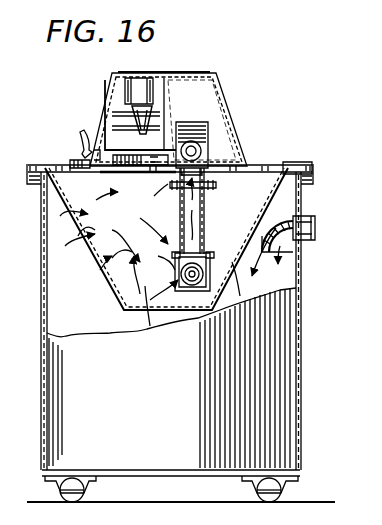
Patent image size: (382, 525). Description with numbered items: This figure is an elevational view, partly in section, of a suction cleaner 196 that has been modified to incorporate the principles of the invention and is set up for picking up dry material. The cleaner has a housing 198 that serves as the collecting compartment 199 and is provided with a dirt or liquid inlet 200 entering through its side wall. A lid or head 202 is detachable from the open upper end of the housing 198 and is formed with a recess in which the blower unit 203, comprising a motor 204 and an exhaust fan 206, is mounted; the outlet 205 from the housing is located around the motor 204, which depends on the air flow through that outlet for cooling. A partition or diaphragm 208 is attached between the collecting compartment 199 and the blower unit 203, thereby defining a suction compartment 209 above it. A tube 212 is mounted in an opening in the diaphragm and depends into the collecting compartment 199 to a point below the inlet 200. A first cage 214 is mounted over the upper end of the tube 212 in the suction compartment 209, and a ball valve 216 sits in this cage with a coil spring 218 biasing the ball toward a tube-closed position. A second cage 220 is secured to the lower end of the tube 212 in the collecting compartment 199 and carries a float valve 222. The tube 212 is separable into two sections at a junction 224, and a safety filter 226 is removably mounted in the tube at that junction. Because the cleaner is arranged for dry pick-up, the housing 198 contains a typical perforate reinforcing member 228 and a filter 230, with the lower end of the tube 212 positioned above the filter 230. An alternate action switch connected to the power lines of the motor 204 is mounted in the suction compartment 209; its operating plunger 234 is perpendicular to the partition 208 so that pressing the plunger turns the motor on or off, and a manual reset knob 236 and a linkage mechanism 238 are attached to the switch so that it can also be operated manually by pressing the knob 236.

The suction cleaner 196 is at (322, 132).
The housing 198 is at (300, 340).
The collecting compartment 199 is at (128, 270).
The dirt or liquid inlet 200 is at (316, 234).
The lid or head 202 is at (288, 165).
The blower unit 203 is at (126, 100).
The motor 204 is at (141, 80).
The outlet 205 is at (166, 72).
The exhaust fan 206 is at (212, 82).
The partition or diaphragm 208 is at (126, 174).
The suction compartment 209 is at (205, 88).
The tube 212 is at (206, 216).
The first cage 214 is at (208, 135).
The ball valve 216 is at (210, 150).
The coil spring 218 is at (206, 126).
The second cage 220 is at (206, 262).
The float valve 222 is at (196, 286).
The junction 224 is at (172, 188).
The safety filter 226 is at (182, 196).
The perforate reinforcing member 228 is at (95, 229).
The filter 230 is at (112, 256).
The operating plunger 234 is at (152, 174).
The manual reset knob 236 is at (86, 134).
The linkage mechanism 238 is at (136, 112).